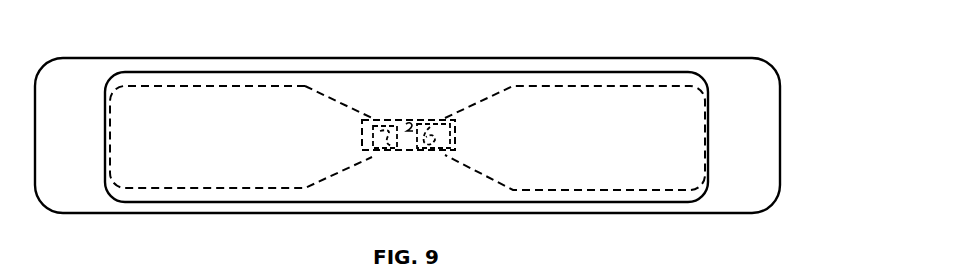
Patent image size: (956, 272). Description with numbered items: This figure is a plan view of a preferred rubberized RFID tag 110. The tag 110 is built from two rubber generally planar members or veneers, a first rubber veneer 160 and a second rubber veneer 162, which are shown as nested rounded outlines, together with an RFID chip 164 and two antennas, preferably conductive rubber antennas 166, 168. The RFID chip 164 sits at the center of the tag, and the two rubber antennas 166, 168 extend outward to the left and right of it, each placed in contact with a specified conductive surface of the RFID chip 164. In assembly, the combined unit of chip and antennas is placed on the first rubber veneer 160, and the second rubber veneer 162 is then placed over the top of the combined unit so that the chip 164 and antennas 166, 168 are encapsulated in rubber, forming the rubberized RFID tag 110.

The rubberized RFID tag 110 is at (767, 51).
The first rubber veneer 160 is at (76, 92).
The second rubber veneer 162 is at (183, 72).
The RFID chip 164 is at (412, 118).
The conductive rubber antenna 166 is at (285, 133).
The conductive rubber antenna 168 is at (600, 126).